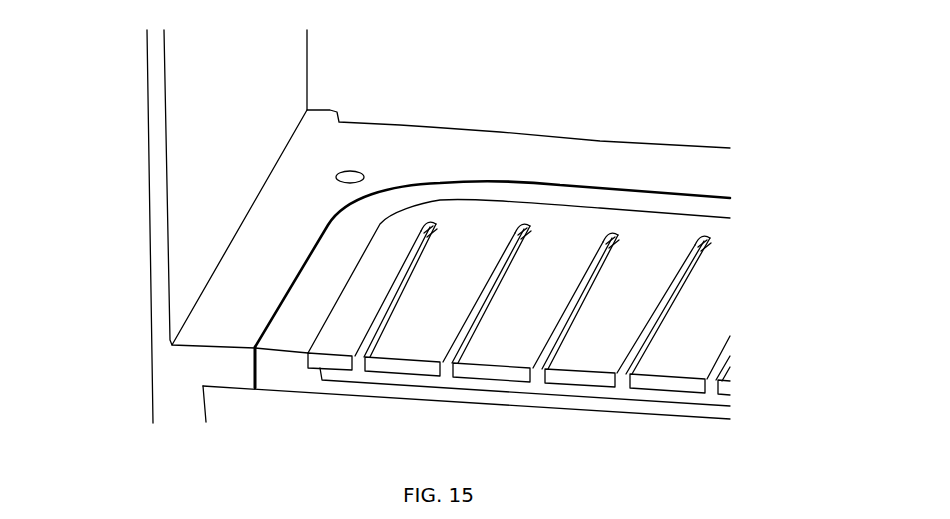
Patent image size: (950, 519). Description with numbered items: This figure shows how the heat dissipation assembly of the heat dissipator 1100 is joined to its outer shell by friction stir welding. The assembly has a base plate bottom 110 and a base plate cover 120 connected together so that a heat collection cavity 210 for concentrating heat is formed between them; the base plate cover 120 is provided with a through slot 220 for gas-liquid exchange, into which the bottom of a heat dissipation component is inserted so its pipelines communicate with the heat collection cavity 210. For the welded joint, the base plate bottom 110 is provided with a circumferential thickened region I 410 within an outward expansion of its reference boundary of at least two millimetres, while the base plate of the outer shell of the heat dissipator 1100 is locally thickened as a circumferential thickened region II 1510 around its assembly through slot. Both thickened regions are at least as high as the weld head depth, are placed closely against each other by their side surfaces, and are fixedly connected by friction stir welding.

The heat dissipator 1100 is at (138, 245).
The base plate cover 120 is at (702, 227).
The through slot 220 is at (678, 287).
The heat collection cavity 210 is at (523, 390).
The base plate bottom 110 is at (717, 408).
The circumferential thickened region II 1510 is at (235, 372).
The circumferential thickened region I 410 is at (270, 378).